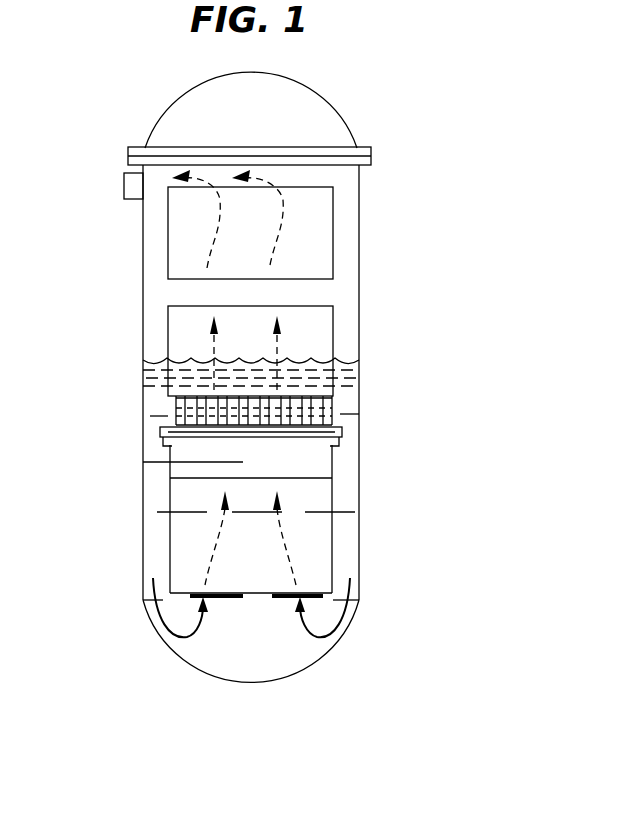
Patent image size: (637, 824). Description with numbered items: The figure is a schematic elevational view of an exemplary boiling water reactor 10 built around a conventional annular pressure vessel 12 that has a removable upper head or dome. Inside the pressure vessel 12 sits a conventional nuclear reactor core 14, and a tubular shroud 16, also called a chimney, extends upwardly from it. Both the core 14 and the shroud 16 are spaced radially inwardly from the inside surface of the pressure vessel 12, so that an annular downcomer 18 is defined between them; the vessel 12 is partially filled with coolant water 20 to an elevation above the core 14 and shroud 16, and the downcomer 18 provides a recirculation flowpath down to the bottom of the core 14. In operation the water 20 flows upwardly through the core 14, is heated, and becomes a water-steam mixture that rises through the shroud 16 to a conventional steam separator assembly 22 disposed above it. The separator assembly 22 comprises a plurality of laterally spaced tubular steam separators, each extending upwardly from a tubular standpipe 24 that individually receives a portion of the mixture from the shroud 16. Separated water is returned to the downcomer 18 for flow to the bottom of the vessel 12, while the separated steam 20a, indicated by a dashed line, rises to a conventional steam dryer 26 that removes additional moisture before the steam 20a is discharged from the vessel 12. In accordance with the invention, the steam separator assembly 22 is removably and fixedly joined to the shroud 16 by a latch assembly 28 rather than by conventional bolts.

The boiling water reactor 10 is at (478, 143).
The pressure vessel 12 is at (359, 237).
The nuclear reactor core 14 is at (335, 550).
The shroud 16 is at (310, 462).
The downcomer 18 is at (143, 560).
The coolant water 20 is at (338, 368).
The steam 20a is at (180, 230).
The steam separator assembly 22 is at (333, 318).
The standpipe 24 is at (340, 402).
The steam dryer 26 is at (168, 260).
The latch assembly 28 is at (142, 435).